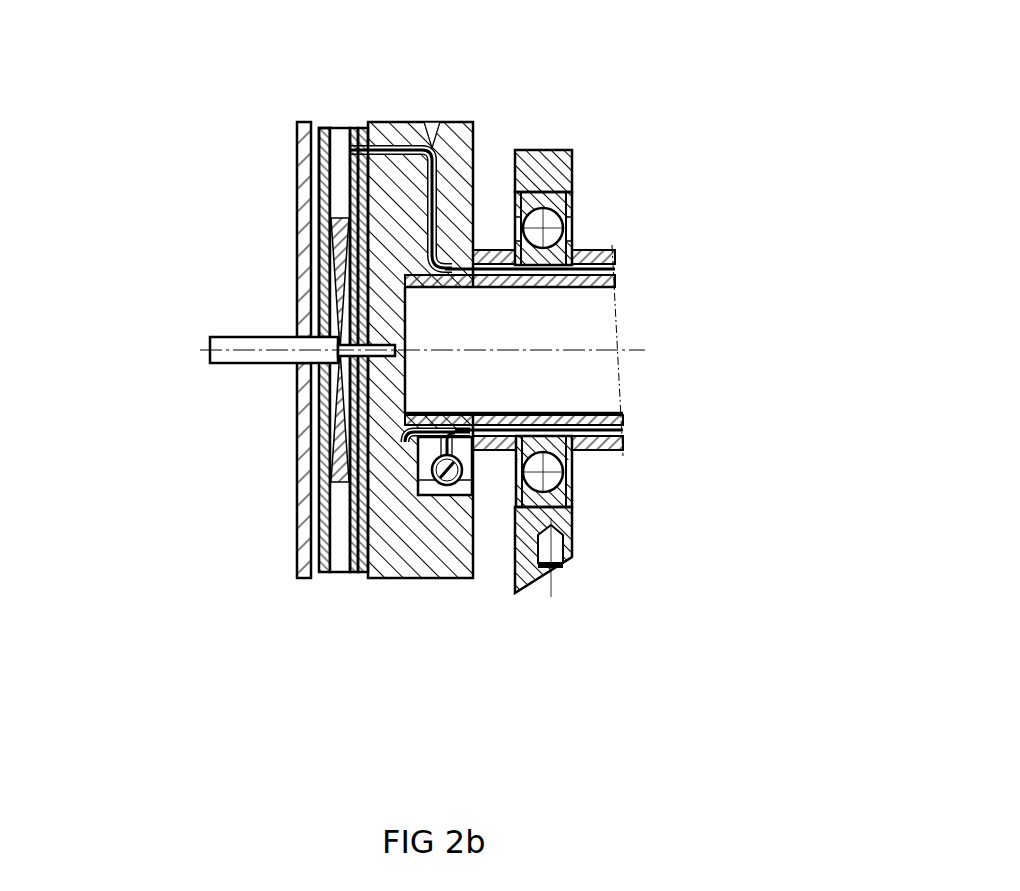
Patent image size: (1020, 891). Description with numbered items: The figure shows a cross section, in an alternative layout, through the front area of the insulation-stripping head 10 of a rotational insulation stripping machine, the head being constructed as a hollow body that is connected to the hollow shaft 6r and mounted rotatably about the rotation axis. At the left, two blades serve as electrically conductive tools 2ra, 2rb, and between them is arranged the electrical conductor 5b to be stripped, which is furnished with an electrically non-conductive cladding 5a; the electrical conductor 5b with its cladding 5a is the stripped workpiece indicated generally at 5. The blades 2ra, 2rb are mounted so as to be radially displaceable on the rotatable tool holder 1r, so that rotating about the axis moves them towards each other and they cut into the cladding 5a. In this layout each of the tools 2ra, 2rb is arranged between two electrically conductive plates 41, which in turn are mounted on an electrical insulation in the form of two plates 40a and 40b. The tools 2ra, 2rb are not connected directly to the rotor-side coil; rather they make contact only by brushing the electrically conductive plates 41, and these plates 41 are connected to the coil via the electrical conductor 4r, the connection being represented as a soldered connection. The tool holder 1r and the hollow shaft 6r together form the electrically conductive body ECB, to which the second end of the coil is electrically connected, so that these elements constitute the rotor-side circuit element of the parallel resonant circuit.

The insulation-stripping head 10 is at (700, 85).
The electrical conductor 4r is at (556, 432).
The blade (electrically conductive tool) 2ra is at (298, 195).
The blade (electrically conductive tool) 2rb is at (297, 463).
The shaft 5 is at (250, 365).
The electrically non-conductive cladding 5a is at (305, 350).
The electrical conductor 5b is at (298, 258).
The electrical insulation plate 40a is at (313, 576).
The electrically conductive plates 41 is at (333, 573).
The electrical insulation plate 40b is at (355, 577).
The rotatable tool holder 1r is at (420, 580).
The hollow shaft 6r is at (518, 363).
The electrically conductive body ECB is at (473, 720).